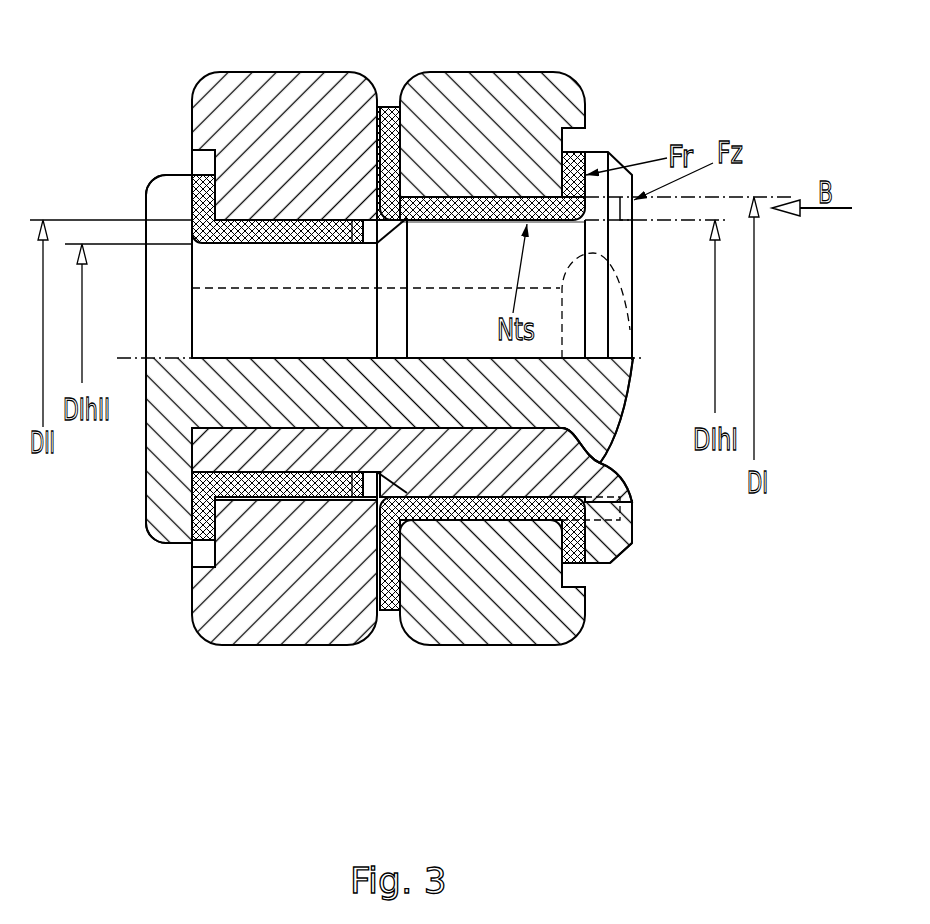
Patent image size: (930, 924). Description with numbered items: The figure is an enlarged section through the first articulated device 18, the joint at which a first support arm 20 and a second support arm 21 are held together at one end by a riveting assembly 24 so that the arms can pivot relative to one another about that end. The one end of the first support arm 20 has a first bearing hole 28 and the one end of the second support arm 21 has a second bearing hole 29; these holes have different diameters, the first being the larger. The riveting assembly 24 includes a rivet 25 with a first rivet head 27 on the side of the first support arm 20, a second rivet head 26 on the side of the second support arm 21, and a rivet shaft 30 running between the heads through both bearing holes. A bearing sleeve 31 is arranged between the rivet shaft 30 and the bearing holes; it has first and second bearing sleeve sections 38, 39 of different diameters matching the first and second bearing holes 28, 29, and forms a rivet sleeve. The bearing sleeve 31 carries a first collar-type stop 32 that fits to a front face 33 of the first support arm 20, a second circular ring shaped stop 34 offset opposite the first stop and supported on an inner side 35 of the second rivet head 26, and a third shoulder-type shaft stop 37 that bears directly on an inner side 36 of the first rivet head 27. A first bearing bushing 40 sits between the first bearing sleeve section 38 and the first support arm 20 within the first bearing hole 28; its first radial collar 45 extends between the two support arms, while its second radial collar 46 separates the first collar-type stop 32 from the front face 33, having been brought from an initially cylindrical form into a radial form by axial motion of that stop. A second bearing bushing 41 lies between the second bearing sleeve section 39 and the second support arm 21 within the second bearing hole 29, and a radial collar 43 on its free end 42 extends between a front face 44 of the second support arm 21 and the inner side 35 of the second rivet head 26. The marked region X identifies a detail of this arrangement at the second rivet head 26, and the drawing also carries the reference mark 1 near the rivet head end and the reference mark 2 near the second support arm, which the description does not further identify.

The outer ring 1 is at (597, 158).
The stud flange 2 is at (165, 197).
The first articulated device 18 is at (135, 464).
The first support arm 20 is at (461, 85).
The second support arm 21 is at (248, 85).
The riveting assembly 24 is at (638, 297).
The rivet 25 is at (615, 447).
The second rivet head 26 is at (140, 499).
The first rivet head 27 is at (620, 343).
The first bearing hole 28 is at (514, 181).
The second bearing hole 29 is at (261, 198).
The rivet shaft 30 is at (447, 390).
The bearing sleeve 31 is at (618, 560).
The first collar-type stop 32 is at (612, 538).
The front face 33 is at (566, 568).
The second circular ring shaped stop 34 is at (198, 447).
The inner side 35 is at (194, 332).
The inner side 36 is at (589, 437).
The third shoulder-type shaft stop 37 is at (573, 470).
The first bearing sleeve section 38 is at (455, 223).
The second bearing sleeve section 39 is at (315, 245).
The first bearing bushing 40 is at (477, 210).
The second bearing bushing 41 is at (290, 232).
The free end 42 is at (176, 556).
The radial collar 43 is at (202, 520).
The front face 44 is at (198, 567).
The first radial collar 45 is at (386, 127).
The second radial collar 46 is at (570, 163).
The detail region X is at (633, 515).